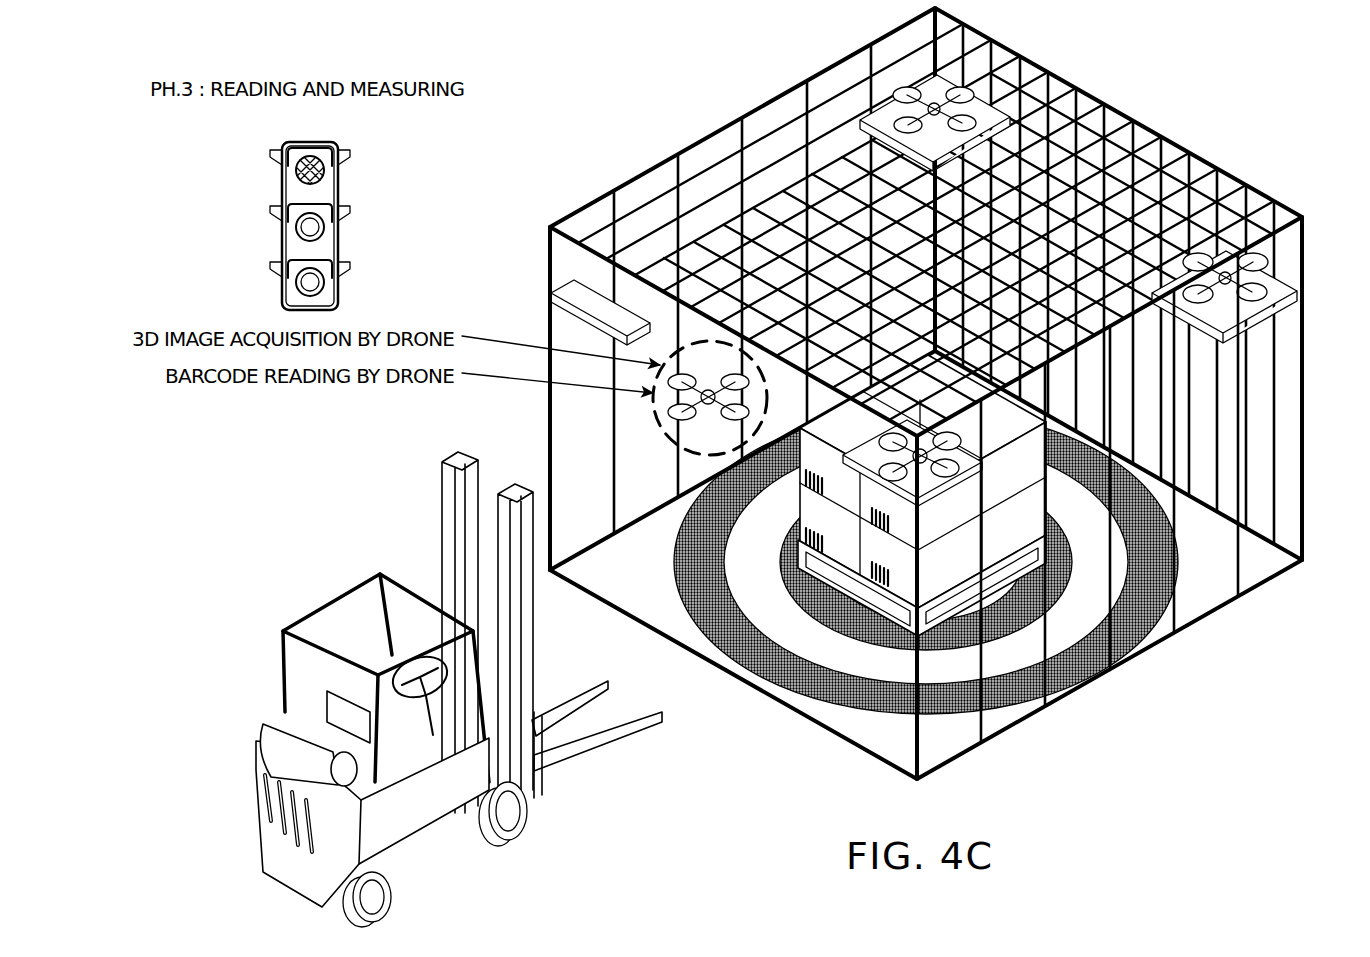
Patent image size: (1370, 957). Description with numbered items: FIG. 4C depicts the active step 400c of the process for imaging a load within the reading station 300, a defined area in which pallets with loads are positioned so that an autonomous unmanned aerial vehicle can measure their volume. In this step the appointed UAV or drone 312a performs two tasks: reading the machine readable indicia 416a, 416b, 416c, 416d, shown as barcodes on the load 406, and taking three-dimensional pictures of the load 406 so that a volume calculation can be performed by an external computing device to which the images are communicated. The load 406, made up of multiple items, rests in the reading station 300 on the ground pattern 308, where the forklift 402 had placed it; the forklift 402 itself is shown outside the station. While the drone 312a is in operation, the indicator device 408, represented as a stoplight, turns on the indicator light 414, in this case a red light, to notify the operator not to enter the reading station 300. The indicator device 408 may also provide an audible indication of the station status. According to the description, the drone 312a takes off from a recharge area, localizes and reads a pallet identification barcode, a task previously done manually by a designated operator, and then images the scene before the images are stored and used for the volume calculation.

The active step 400c is at (599, 85).
The reading station 300 is at (926, 393).
The ground pattern 308 is at (700, 603).
The UAV 312a is at (656, 408).
The forklift 402 is at (322, 600).
The load 406 is at (891, 593).
The indicator device 408 is at (275, 226).
The indicator light 414 is at (303, 176).
The machine readable indicia 416a is at (805, 476).
The machine readable indicia 416b is at (870, 516).
The machine readable indicia 416c is at (806, 539).
The machine readable indicia 416d is at (873, 573).